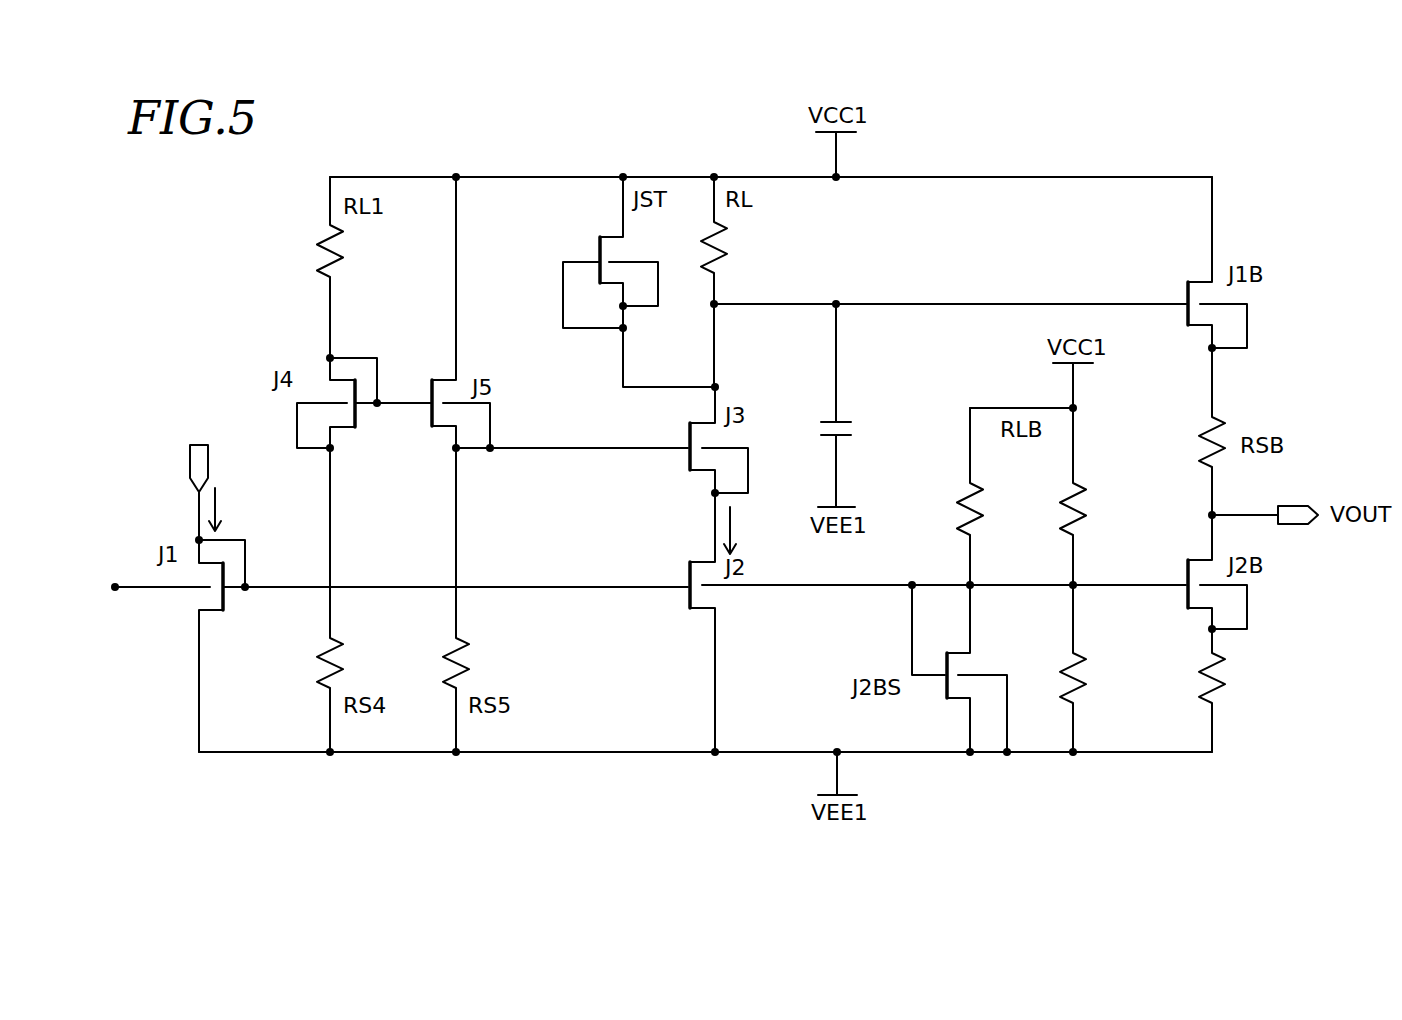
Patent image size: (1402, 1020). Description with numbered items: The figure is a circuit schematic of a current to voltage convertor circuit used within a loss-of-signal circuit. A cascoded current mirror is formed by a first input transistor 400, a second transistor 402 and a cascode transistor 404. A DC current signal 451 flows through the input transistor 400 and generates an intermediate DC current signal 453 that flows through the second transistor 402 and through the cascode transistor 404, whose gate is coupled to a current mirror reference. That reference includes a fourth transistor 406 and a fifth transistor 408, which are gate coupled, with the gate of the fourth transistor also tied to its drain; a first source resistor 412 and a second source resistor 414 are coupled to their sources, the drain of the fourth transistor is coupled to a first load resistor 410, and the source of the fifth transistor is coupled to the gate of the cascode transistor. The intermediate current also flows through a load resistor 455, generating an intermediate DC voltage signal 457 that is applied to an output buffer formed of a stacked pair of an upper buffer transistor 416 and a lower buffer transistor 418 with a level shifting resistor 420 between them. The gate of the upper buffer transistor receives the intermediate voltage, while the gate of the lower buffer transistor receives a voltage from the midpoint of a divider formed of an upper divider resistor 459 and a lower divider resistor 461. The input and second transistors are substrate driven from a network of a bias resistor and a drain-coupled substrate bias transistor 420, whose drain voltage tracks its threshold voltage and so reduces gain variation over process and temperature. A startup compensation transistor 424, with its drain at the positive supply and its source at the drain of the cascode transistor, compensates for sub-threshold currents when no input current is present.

The transistor J1 400 is at (200, 595).
The transistor J2 402 is at (690, 608).
The transistor J3 404 is at (690, 470).
The transistor J4 406 is at (330, 386).
The transistor J5 408 is at (458, 397).
The resistor RL1 410 is at (340, 257).
The resistor RS4 412 is at (318, 658).
The resistor RS5 414 is at (445, 658).
The transistor J1B 416 is at (1188, 325).
The transistor J2B 418 is at (1188, 608).
The level shifting resistor RSB / transistor J2BS 420 is at (1222, 420).
The transistor JST 424 is at (600, 328).
The DC current signal 451 is at (218, 500).
The intermediate DC current signal 453 is at (733, 523).
The load resistor RL 455 is at (735, 253).
The intermediate DC voltage signal 457 is at (965, 304).
The voltage divider resistor 459 is at (1083, 487).
The voltage divider resistor 461 is at (1083, 683).